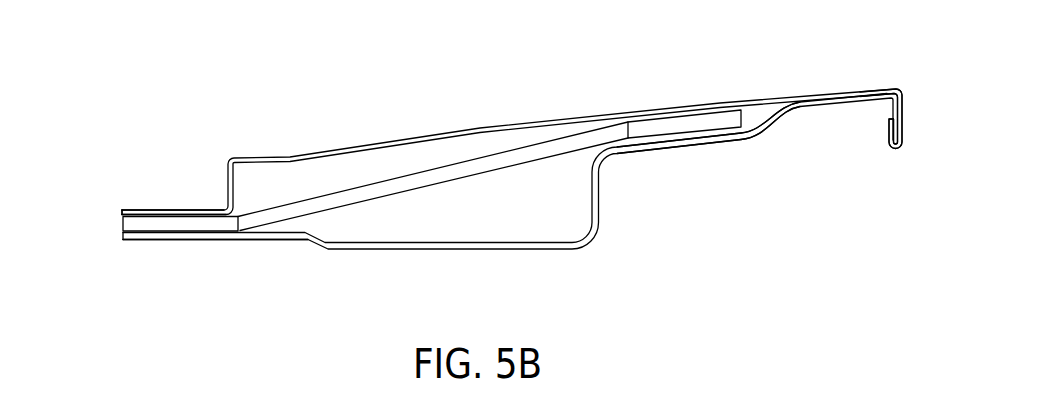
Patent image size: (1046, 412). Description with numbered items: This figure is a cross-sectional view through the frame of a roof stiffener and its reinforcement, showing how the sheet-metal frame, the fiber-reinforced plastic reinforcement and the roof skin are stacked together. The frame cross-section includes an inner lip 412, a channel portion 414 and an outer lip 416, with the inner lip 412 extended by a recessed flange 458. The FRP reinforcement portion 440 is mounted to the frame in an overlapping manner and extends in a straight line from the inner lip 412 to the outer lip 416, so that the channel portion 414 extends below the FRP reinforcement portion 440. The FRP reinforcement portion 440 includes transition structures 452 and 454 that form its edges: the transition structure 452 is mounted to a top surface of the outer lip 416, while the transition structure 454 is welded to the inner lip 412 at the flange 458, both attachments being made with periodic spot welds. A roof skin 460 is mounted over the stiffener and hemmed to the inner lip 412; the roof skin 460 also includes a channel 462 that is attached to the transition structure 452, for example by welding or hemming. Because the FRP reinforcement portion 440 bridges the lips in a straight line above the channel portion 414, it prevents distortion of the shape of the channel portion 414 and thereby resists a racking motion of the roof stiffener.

The inner lip 412 is at (825, 105).
The channel portion 414 is at (397, 251).
The outer lip 416 is at (204, 240).
The FRP reinforcement portion 440 is at (508, 168).
The transition structure 452 is at (133, 223).
The transition structure 454 is at (688, 122).
The recessed flange 458 is at (707, 138).
The roof skin 460 is at (478, 128).
The channel 462 is at (200, 210).